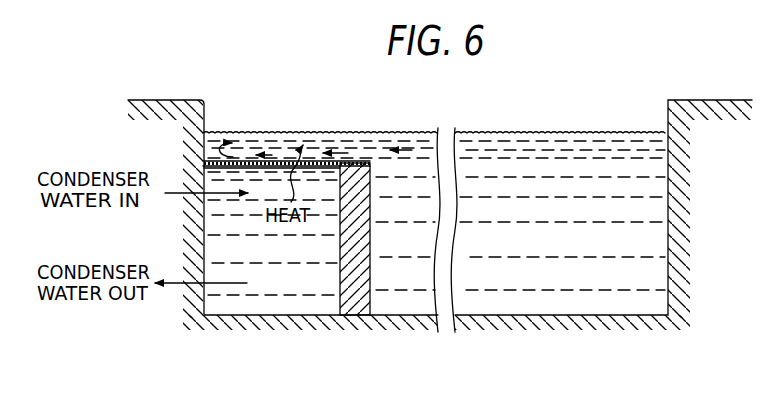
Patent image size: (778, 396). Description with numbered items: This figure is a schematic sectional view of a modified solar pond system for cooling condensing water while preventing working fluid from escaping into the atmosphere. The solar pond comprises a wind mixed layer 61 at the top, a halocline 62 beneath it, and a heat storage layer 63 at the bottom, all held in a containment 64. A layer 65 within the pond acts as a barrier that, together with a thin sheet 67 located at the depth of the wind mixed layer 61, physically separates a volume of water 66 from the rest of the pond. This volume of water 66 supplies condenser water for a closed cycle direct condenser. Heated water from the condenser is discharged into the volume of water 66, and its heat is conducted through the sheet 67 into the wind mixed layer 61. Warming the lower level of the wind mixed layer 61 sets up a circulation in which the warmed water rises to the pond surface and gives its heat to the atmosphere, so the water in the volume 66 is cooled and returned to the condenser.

The wind mixed layer 61 is at (652, 150).
The halocline 62 is at (655, 198).
The heat storage layer 63 is at (660, 240).
The containment 64 is at (660, 297).
The layer 65 is at (360, 196).
The volume of water 66 is at (292, 302).
The thin sheet 67 is at (313, 161).